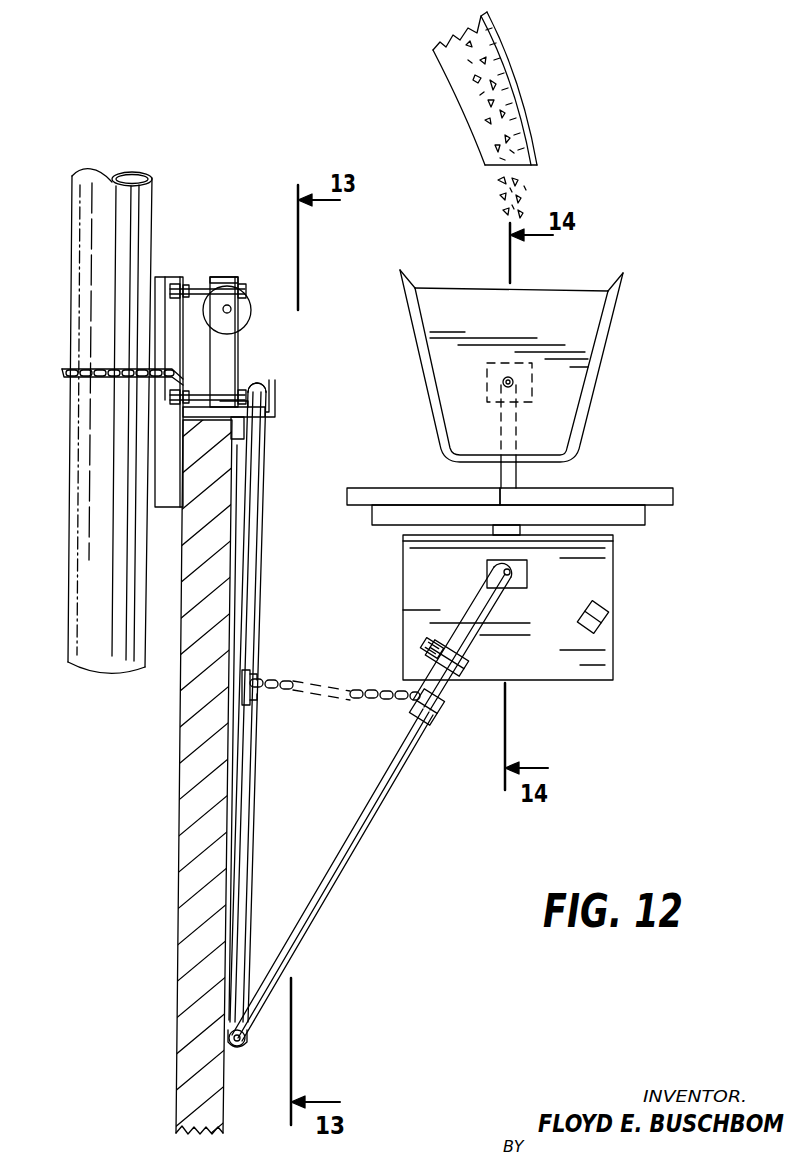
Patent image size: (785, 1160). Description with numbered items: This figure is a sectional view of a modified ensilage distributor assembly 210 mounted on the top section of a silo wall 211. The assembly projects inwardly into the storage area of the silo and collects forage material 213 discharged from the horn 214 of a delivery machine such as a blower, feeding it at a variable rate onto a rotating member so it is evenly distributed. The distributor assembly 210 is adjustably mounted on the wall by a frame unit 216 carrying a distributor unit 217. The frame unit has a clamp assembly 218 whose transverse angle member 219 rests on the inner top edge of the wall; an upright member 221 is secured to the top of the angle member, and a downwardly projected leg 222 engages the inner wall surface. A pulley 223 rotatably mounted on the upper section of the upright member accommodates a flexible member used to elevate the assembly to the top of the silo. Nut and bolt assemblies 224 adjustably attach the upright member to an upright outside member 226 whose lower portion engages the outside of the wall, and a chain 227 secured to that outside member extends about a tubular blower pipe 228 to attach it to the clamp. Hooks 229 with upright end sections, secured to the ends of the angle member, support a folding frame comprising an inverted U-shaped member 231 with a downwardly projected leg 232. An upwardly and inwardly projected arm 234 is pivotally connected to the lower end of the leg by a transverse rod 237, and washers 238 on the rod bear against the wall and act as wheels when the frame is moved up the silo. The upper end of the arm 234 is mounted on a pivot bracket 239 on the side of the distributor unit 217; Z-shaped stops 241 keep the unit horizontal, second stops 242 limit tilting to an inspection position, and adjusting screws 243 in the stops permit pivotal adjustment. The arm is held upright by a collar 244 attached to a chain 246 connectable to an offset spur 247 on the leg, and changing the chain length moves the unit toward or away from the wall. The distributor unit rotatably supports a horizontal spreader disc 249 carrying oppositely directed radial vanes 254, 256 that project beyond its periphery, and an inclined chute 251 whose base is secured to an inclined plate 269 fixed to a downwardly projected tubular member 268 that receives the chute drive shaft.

The distributor assembly 210 is at (279, 162).
The silo wall 211 is at (186, 776).
The forage material 213 is at (527, 186).
The horn 214 is at (520, 72).
The frame unit 216 is at (280, 459).
The distributor unit 217 is at (640, 428).
The clamp assembly 218 is at (237, 276).
The angle member 219 is at (255, 434).
The upright member 221 is at (240, 352).
The leg 222 is at (238, 524).
The pulley 223 is at (250, 300).
The nut and bolt assemblies 224 is at (204, 288).
The upright outside member 226 is at (168, 502).
The chain 227 is at (92, 370).
The tubular blower pipe 228 is at (82, 450).
The hooks 229 is at (278, 390).
The inverted U-shaped member 231 is at (258, 389).
The leg 232 is at (249, 812).
The arm 234 is at (350, 885).
The transverse rod 237 is at (240, 1047).
The washers 238 is at (247, 1033).
The pivot brackets 239 is at (527, 582).
The stops 241 is at (447, 648).
The second stops 242 is at (606, 614).
The adjusting screws 243 is at (420, 650).
The collars 244 is at (436, 720).
The chains 246 is at (365, 700).
The offset spurs 247 is at (256, 702).
The spreader disc 249 is at (645, 520).
The chute 251 is at (598, 302).
The vane 254 is at (378, 489).
The vane 256 is at (652, 490).
The tubular member 268 is at (517, 478).
The inclined plate 269 is at (526, 362).